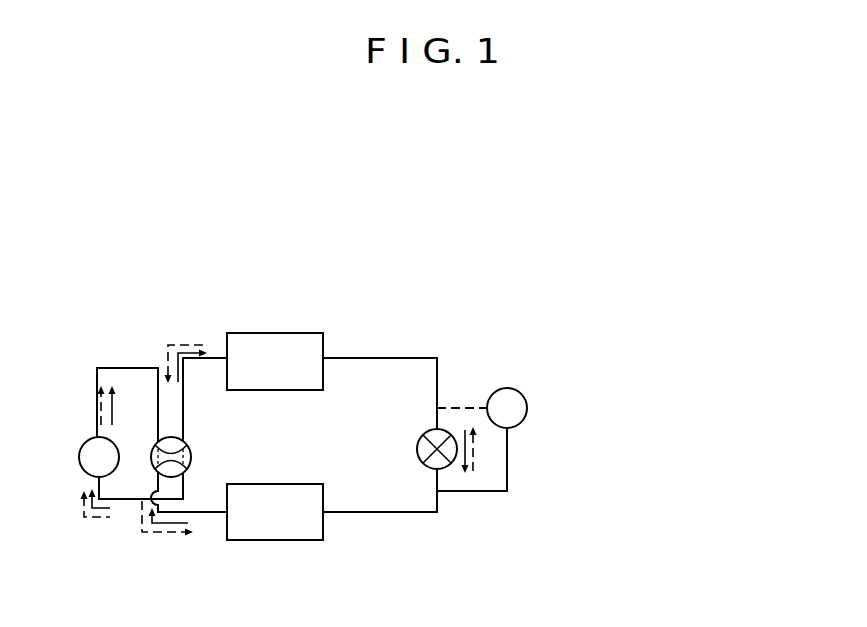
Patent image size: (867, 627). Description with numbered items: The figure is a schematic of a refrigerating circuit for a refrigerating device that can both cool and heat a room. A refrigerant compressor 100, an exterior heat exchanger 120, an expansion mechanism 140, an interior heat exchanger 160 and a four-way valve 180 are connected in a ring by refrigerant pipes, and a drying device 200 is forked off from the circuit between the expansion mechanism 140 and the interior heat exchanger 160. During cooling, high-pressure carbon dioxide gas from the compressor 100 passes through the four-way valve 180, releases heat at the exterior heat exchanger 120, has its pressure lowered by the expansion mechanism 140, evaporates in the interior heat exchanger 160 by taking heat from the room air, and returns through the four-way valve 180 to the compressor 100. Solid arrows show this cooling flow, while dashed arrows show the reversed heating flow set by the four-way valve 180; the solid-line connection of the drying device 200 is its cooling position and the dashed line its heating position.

The refrigerant compressor 100 is at (79, 465).
The exterior heat exchanger 120 is at (293, 333).
The expansion mechanism 140 is at (443, 425).
The interior heat exchanger 160 is at (302, 540).
The four-way valve 180 is at (188, 444).
The drying device 200 is at (519, 424).